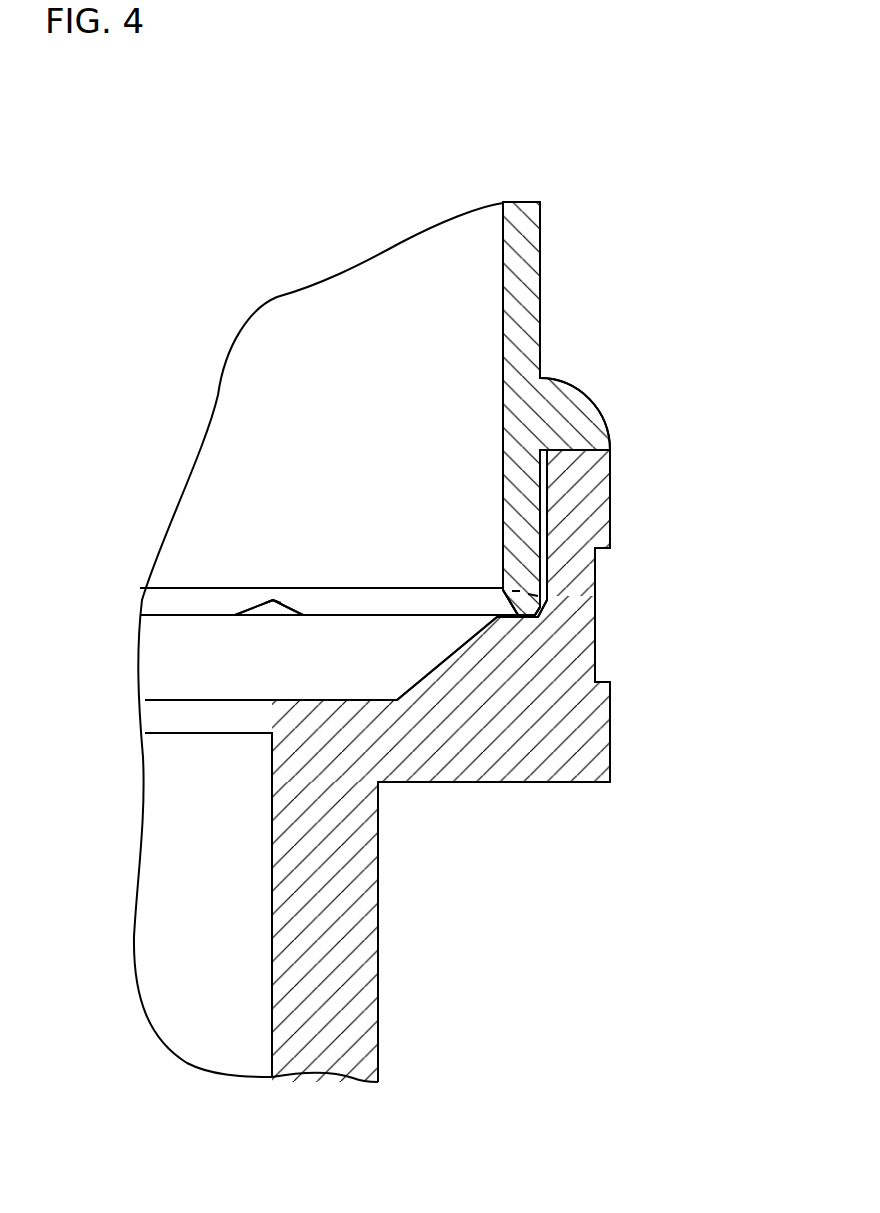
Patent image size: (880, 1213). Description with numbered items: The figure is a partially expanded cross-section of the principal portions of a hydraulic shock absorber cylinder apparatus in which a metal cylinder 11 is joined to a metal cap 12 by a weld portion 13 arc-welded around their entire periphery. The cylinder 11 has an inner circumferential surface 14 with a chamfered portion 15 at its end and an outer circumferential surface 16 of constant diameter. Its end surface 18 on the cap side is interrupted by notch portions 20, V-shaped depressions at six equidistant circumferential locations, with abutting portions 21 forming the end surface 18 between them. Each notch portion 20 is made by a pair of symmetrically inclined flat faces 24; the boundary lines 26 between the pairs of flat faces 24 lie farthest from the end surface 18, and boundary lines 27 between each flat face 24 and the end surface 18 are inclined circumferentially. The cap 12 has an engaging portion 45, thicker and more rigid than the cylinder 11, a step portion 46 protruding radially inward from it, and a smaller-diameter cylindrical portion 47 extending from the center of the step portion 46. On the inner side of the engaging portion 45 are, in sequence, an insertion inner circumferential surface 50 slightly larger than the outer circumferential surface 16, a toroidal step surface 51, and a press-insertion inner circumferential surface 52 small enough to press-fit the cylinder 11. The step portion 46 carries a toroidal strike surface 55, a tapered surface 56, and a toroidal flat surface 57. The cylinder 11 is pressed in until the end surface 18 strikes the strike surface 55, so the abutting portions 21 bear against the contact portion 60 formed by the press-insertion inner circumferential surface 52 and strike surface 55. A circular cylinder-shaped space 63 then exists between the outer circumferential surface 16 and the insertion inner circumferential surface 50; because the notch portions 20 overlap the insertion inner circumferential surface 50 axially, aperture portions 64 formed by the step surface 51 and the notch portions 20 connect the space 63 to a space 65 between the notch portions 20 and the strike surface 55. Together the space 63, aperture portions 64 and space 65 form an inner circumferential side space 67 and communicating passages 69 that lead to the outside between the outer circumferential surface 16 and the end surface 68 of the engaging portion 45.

The cylinder 11 is at (548, 226).
The cap 12 is at (392, 1037).
The weld portion 13 is at (583, 403).
The inner circumferential surface 14 is at (503, 245).
The chamfered portion 15 is at (157, 602).
The outer circumferential surface 16 is at (540, 257).
The end surface 18 is at (167, 615).
The notch portions 20 is at (258, 608).
The abutting portions 21 is at (352, 615).
The flat faces 24 is at (247, 615).
The boundary lines 26 is at (273, 601).
The boundary lines 27 is at (236, 615).
The engaging portion 45 is at (603, 508).
The step portion 46 is at (448, 762).
The cylindrical portion 47 is at (358, 940).
The insertion inner circumferential surface 50 is at (545, 470).
The step surface 51 is at (541, 584).
The press-insertion inner circumferential surface 52 is at (528, 612).
The strike surface 55 is at (485, 588).
The tapered surface 56 is at (445, 658).
The flat surface 57 is at (350, 700).
The contact portion 60 is at (532, 607).
The space 63 is at (528, 605).
The aperture portions 64 is at (515, 597).
The space 65 is at (497, 590).
The inner circumferential side space 67 is at (343, 573).
The end surface 68 is at (587, 449).
The communicating passages 69 is at (223, 190).